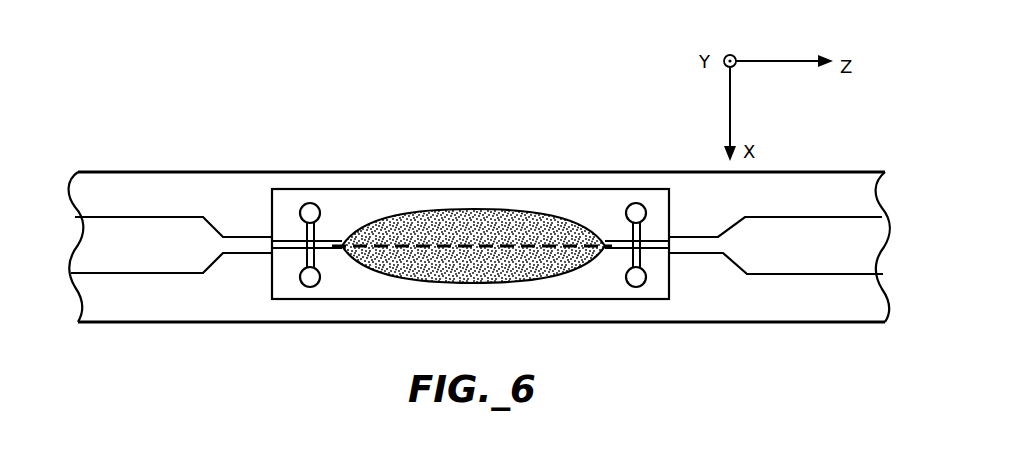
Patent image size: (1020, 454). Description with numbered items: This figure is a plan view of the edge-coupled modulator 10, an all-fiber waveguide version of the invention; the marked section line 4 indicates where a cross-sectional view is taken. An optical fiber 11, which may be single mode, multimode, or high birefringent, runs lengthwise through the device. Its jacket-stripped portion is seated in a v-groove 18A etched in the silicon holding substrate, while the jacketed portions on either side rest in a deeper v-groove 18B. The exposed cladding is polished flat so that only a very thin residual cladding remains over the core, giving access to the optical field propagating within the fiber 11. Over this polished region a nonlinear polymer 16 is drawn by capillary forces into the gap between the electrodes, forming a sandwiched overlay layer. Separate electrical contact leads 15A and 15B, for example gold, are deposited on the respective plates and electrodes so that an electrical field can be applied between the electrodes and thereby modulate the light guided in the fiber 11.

The edge-coupled modulator 10 is at (589, 180).
The optical fiber 11 is at (176, 208).
The electrical contact lead 15A is at (307, 212).
The electrical contact lead 15B is at (307, 280).
The polymer 16 is at (497, 210).
The v-groove 18A is at (715, 252).
The deeper v-groove 18B is at (752, 270).
The section line 4- 4 is at (312, 172).